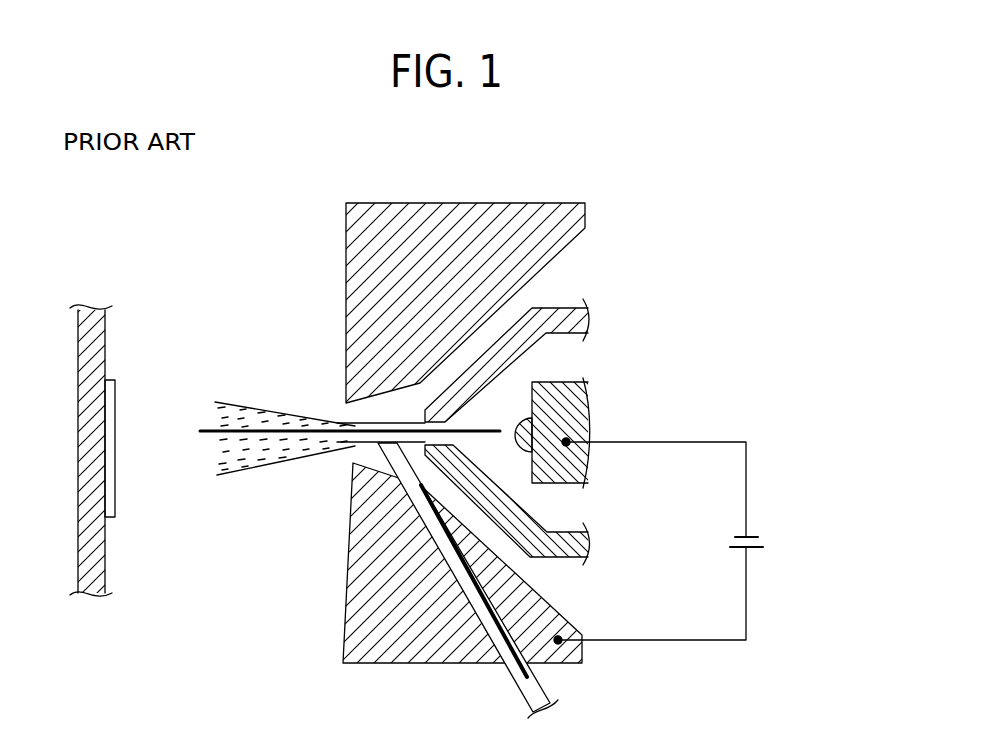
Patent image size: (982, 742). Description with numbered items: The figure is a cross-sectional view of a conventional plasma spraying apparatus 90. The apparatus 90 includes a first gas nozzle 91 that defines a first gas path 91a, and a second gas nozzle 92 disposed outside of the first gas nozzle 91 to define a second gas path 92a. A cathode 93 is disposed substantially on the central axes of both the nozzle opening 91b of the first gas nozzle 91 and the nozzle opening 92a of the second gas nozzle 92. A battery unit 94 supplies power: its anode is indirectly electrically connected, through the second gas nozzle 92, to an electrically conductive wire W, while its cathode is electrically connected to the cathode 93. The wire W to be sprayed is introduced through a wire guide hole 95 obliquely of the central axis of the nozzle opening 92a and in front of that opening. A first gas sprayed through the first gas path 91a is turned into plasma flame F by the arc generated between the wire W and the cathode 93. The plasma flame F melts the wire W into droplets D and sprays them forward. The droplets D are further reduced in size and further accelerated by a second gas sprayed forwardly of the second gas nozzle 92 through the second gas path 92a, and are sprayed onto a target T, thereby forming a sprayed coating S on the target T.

The plasma spraying apparatus 90 is at (480, 400).
The first gas nozzle 91 is at (572, 546).
The first gas path 91a is at (565, 507).
The nozzle opening of the first gas nozzle 91b is at (420, 427).
The second gas nozzle 92 is at (483, 215).
The second gas path 92a is at (512, 313).
The cathode 93 is at (568, 410).
The battery unit 94 is at (779, 526).
The wire guide hole 95 is at (455, 622).
The electrically conductive wire W is at (525, 677).
The plasma flame F is at (352, 427).
The droplets D is at (241, 463).
The target T is at (95, 343).
The sprayed coating S is at (112, 413).